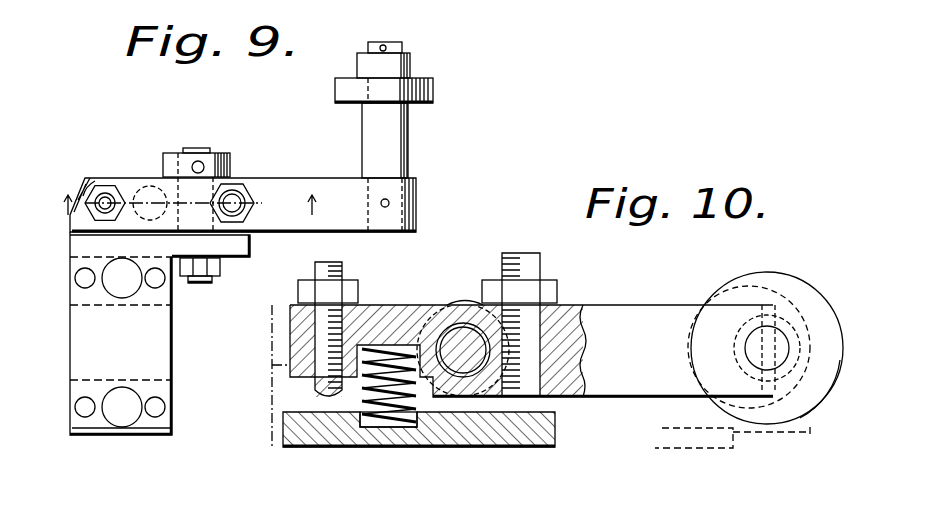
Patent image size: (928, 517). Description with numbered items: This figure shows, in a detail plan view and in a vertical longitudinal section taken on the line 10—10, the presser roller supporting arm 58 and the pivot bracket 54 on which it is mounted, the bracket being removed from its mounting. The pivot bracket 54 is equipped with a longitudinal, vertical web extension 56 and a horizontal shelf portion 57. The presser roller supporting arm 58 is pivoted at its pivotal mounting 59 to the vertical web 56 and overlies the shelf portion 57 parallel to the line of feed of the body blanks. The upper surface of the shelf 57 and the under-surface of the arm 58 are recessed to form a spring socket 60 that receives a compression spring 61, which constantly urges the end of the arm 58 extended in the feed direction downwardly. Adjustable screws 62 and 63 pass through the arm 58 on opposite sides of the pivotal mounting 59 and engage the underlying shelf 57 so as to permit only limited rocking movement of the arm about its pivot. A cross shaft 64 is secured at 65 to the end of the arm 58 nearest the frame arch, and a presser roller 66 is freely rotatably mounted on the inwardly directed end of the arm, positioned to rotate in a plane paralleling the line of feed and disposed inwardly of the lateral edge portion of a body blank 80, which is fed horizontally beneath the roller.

In FIG. 9, the section line 10 is at (205, 196).
In FIG. 9, the pivot bracket 54 is at (150, 365).
In FIG. 9, the vertical web extension 56 is at (167, 267).
In FIG. 10, the horizontal shelf portion 57 is at (478, 440).
In FIG. 10, the presser roller supporting arm 58 is at (531, 349).
In FIG. 9, the pivotal mounting 59 is at (197, 188).
In FIG. 10, the pivotal mounting 59 is at (457, 333).
In FIG. 9, the spring socket 60 is at (135, 183).
In FIG. 10, the spring socket 60 is at (388, 335).
In FIG. 9, the compression spring 61 is at (147, 185).
In FIG. 10, the compression spring 61 is at (362, 395).
In FIG. 9, the adjustable screw 62 is at (250, 193).
In FIG. 10, the adjustable screw 62 is at (540, 263).
In FIG. 9, the adjustable screw 63 is at (103, 185).
In FIG. 10, the adjustable screw 63 is at (342, 267).
In FIG. 9, the cross shaft 64 is at (393, 122).
In FIG. 10, the cross shaft 64 is at (750, 348).
In FIG. 9, the securing point of cross shaft 65 is at (390, 203).
In FIG. 10, the securing point of cross shaft 65 is at (730, 300).
In FIG. 9, the presser roller 66 is at (428, 82).
In FIG. 10, the presser roller 66 is at (777, 280).
In FIG. 10, the body blank 80 is at (682, 425).